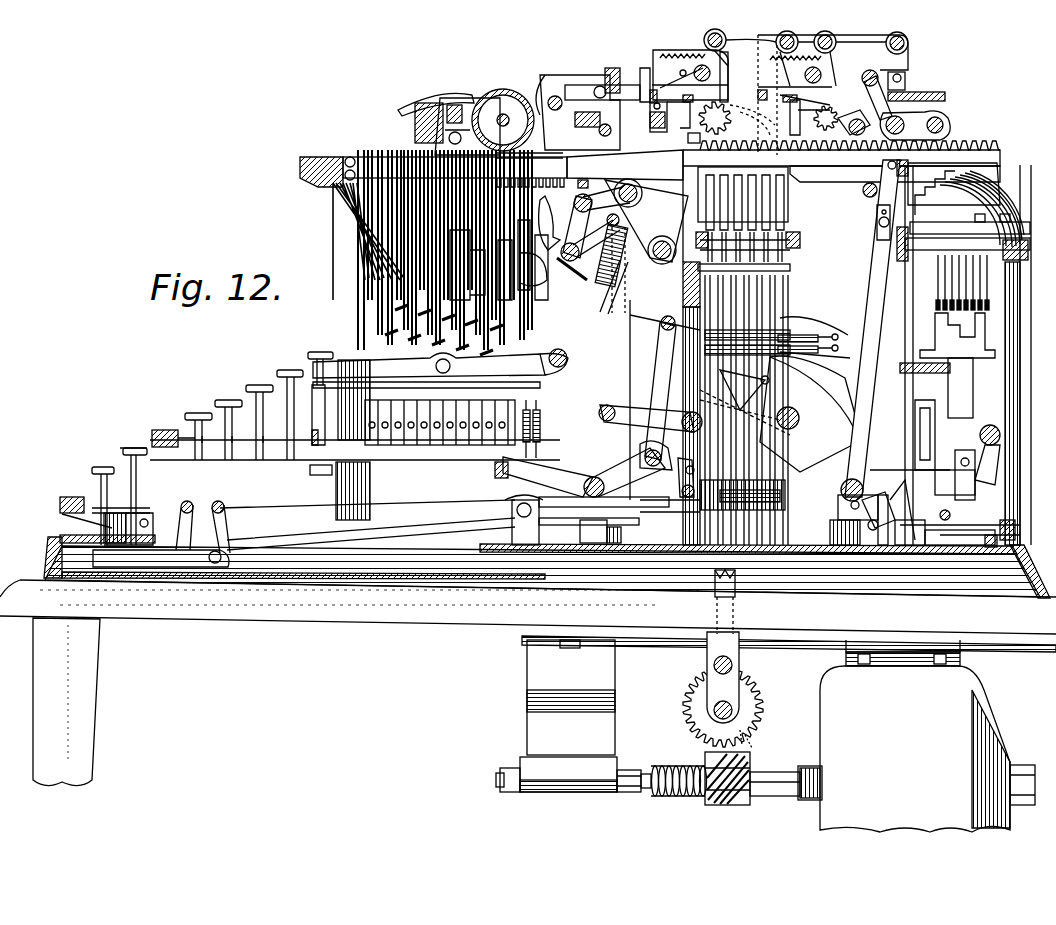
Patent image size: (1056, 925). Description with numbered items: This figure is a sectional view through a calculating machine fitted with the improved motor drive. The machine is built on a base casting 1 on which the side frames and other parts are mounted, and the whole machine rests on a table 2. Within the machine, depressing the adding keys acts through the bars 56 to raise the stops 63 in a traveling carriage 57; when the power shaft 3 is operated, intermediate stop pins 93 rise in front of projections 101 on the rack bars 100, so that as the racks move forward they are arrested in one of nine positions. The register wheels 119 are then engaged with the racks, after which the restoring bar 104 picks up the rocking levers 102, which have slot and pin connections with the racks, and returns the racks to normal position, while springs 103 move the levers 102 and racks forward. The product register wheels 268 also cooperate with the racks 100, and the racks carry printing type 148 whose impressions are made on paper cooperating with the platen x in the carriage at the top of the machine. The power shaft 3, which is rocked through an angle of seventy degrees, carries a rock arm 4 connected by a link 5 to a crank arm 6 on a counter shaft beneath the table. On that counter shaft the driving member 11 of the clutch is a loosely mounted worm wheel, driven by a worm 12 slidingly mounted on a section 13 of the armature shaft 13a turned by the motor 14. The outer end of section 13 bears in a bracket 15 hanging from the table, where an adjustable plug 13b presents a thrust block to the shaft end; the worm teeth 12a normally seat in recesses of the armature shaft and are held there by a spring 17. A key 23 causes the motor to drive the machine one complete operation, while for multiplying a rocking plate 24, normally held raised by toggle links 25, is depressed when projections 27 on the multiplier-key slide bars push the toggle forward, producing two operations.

The base casting 1 is at (50, 555).
The table 2 is at (547, 581).
The power shaft 3 is at (800, 418).
The rock arm 4 is at (775, 412).
The link 5 is at (735, 590).
The crank arm 6 is at (733, 690).
The driving member of the clutch 11 is at (700, 694).
The worm 12 is at (712, 758).
The teeth of the worm 12a is at (760, 790).
The section of armature shaft 13 is at (680, 790).
The armature shaft 13a is at (785, 770).
The adjustable plug 13b is at (506, 768).
The motor 14 is at (927, 736).
The bracket 15 is at (568, 716).
The spring 17 is at (660, 770).
The key 23 is at (60, 500).
The rocking plate 24 is at (855, 545).
The toggle links 25 is at (872, 540).
The projections 27 is at (912, 545).
The bars 56 is at (770, 290).
The traveling carriage 57 is at (795, 236).
The stops 63 is at (780, 264).
The stop pins 93 is at (785, 205).
The rack bars 100 is at (783, 160).
The projections 101 is at (790, 172).
The rocking levers 102 is at (865, 221).
The springs 103 is at (822, 345).
The restoring bar 104 is at (856, 193).
The register wheels 119 is at (722, 148).
The printing type 148 is at (444, 252).
The product register wheels 268 is at (870, 322).
The platen x is at (503, 95).